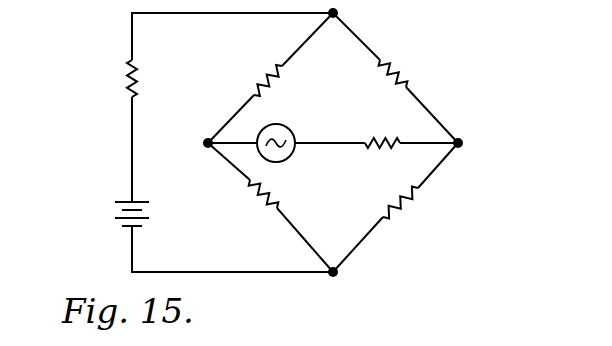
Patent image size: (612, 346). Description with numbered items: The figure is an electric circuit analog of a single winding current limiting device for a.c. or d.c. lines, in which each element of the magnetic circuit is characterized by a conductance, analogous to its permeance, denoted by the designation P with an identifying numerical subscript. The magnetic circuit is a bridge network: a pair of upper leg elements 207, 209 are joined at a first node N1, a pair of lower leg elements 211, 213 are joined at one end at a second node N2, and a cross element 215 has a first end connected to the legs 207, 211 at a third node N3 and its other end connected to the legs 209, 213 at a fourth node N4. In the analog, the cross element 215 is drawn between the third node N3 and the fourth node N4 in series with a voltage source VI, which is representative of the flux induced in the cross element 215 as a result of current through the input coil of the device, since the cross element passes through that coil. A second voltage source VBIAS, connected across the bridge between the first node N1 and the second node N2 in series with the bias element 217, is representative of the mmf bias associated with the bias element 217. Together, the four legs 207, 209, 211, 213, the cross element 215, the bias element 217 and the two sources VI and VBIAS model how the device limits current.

The upper leg element 207 is at (270, 78).
The upper leg element 209 is at (395, 78).
The lower leg element 211 is at (270, 207).
The lower leg element 213 is at (395, 207).
The cross element 215 is at (376, 129).
The bias element 217 is at (111, 78).
The first node N1 is at (344, 0).
The second node N2 is at (336, 275).
The third node N3 is at (205, 141).
The fourth node N4 is at (461, 141).
The voltage source VI is at (255, 139).
The voltage source VBIAS is at (104, 212).